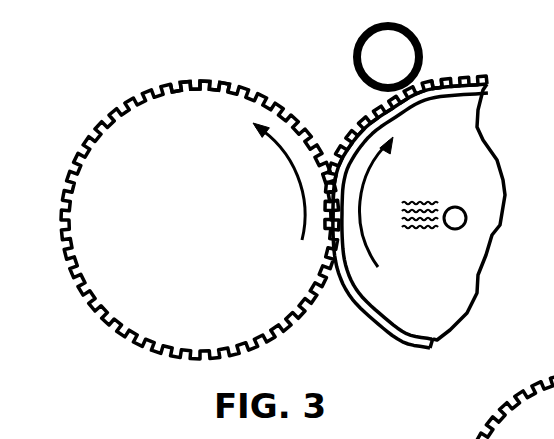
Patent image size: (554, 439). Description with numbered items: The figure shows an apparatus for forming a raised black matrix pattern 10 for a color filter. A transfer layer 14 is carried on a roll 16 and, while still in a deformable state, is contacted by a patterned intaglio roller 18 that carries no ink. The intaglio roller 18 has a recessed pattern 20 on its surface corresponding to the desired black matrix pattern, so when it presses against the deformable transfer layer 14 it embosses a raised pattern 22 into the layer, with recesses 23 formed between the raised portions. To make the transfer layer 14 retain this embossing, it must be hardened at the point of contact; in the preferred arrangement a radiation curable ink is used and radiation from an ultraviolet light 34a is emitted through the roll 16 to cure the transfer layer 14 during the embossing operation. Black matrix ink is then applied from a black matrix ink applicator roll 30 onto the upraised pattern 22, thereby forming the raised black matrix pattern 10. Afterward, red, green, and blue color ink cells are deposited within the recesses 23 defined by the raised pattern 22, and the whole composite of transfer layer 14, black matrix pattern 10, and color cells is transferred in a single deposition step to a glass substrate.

The raised black matrix pattern 10 is at (445, 72).
The transfer layer 14 is at (368, 302).
The roll 16 is at (428, 177).
The patterned intaglio roller 18 is at (211, 229).
The recessed pattern 20 is at (168, 83).
The raised pattern 22 is at (332, 190).
The recesses 23 is at (436, 82).
The black matrix ink applicator roll 30 is at (373, 72).
The ultraviolet light 34a is at (464, 227).